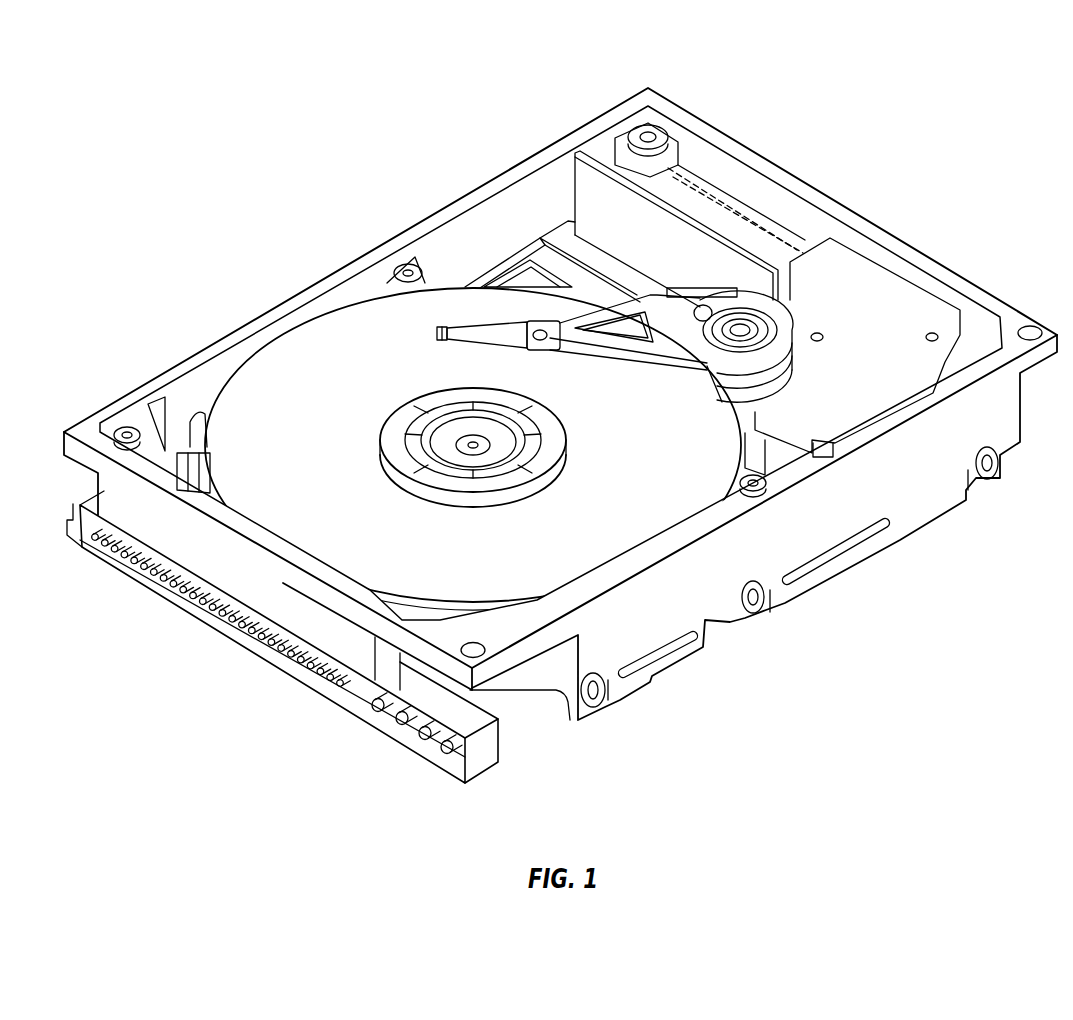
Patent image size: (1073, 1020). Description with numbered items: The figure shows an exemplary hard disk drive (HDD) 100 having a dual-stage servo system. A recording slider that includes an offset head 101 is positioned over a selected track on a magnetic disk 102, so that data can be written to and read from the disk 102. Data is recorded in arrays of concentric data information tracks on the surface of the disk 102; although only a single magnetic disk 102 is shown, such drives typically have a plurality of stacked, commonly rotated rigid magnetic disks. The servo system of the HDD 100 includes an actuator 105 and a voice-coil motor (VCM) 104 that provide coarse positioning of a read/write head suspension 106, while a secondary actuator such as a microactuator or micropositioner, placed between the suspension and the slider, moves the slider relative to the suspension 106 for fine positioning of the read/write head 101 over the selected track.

The hard disk drive 100 is at (560, 435).
The offset head 101 is at (440, 326).
The magnetic disk 102 is at (287, 367).
The voice-coil motor 104 is at (880, 288).
The actuator 105 is at (608, 347).
The read/write head suspension 106 is at (490, 332).